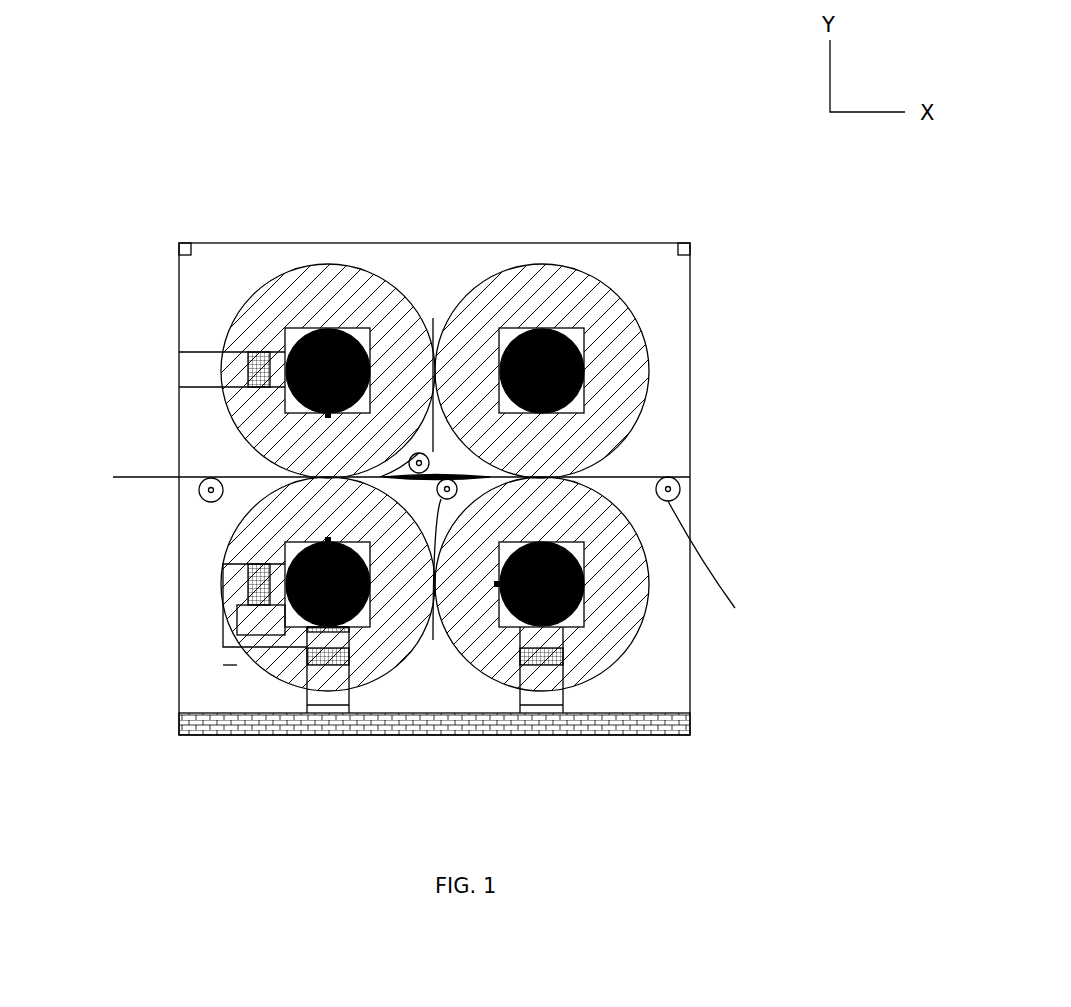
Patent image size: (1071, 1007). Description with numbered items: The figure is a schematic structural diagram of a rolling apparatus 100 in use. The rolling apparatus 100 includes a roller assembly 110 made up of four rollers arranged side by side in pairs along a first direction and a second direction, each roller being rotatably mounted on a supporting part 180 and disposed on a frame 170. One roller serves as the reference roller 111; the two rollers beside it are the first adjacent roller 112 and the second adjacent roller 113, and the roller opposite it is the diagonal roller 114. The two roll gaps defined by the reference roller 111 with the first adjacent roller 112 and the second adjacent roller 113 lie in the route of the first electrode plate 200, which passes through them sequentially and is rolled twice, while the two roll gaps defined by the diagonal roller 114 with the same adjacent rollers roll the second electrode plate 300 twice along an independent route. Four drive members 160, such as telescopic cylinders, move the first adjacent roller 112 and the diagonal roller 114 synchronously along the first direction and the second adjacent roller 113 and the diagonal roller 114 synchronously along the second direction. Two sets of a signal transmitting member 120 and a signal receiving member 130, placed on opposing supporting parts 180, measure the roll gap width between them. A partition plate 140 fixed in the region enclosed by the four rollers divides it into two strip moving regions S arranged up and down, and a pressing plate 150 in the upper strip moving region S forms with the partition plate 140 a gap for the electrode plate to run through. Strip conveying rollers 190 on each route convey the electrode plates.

The rolling apparatus 100 is at (417, 157).
The roller assembly 110 is at (529, 474).
The reference roller 111 is at (575, 282).
The first adjacent roller 112 is at (350, 287).
The second adjacent roller 113 is at (625, 617).
The diagonal roller 114 is at (387, 658).
The signal transmitting member 120 is at (325, 414).
The signal receiving member 130 is at (250, 568).
The partition plate 140 is at (445, 462).
The pressing plate 150 is at (587, 352).
The drive member 160 is at (258, 378).
The frame 170 is at (222, 265).
The supporting part 180 is at (323, 328).
The strip conveying roller 190 is at (680, 489).
The first electrode plate 200 is at (165, 477).
The second electrode plate 300 is at (723, 561).
The strip moving region S is at (318, 640).